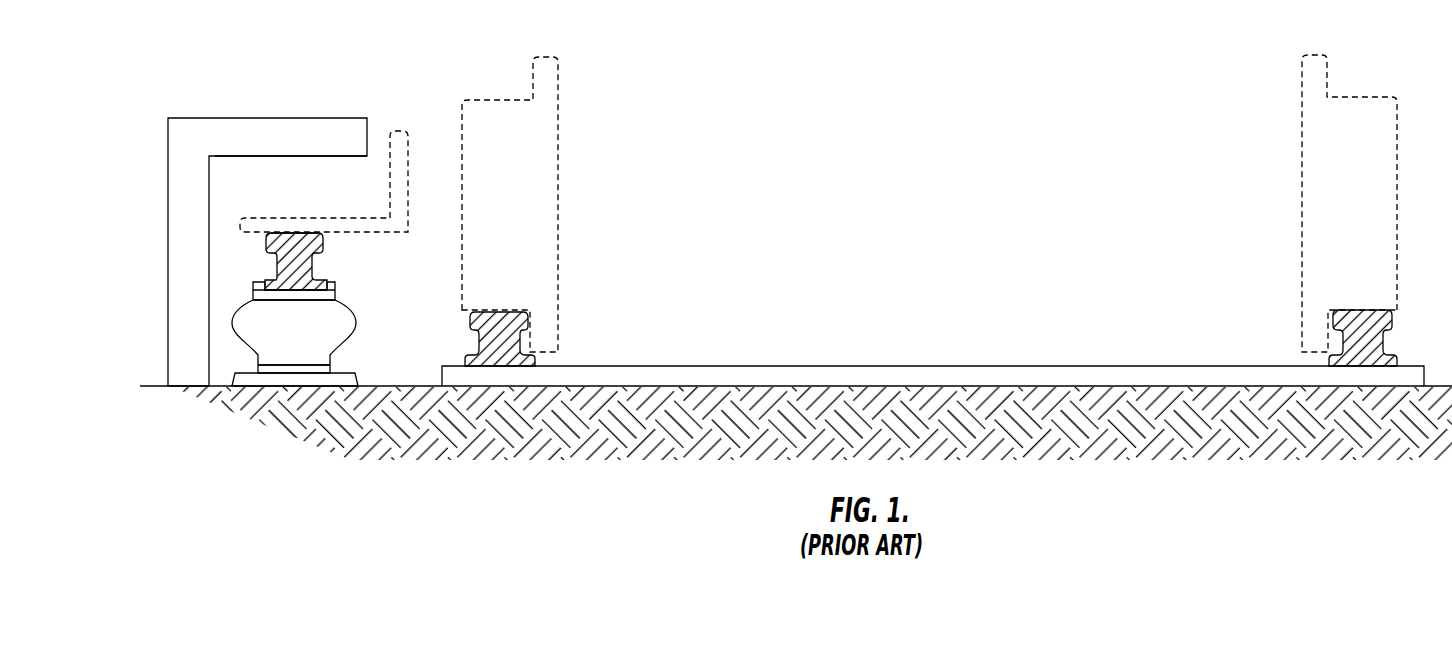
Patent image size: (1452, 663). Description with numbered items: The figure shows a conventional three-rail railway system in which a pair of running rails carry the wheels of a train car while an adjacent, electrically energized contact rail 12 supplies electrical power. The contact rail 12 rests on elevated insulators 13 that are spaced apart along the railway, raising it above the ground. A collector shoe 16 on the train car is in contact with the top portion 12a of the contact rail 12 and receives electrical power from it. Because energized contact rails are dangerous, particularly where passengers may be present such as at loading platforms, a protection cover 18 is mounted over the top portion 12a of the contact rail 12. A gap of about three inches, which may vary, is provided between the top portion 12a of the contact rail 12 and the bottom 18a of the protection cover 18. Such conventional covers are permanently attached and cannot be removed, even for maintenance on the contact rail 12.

The contact rail 12 is at (292, 265).
The top portion 12a is at (283, 233).
The insulators 13 is at (345, 328).
The collector shoe 16 is at (408, 134).
The protection cover 18 is at (290, 137).
The bottom 18a is at (290, 157).